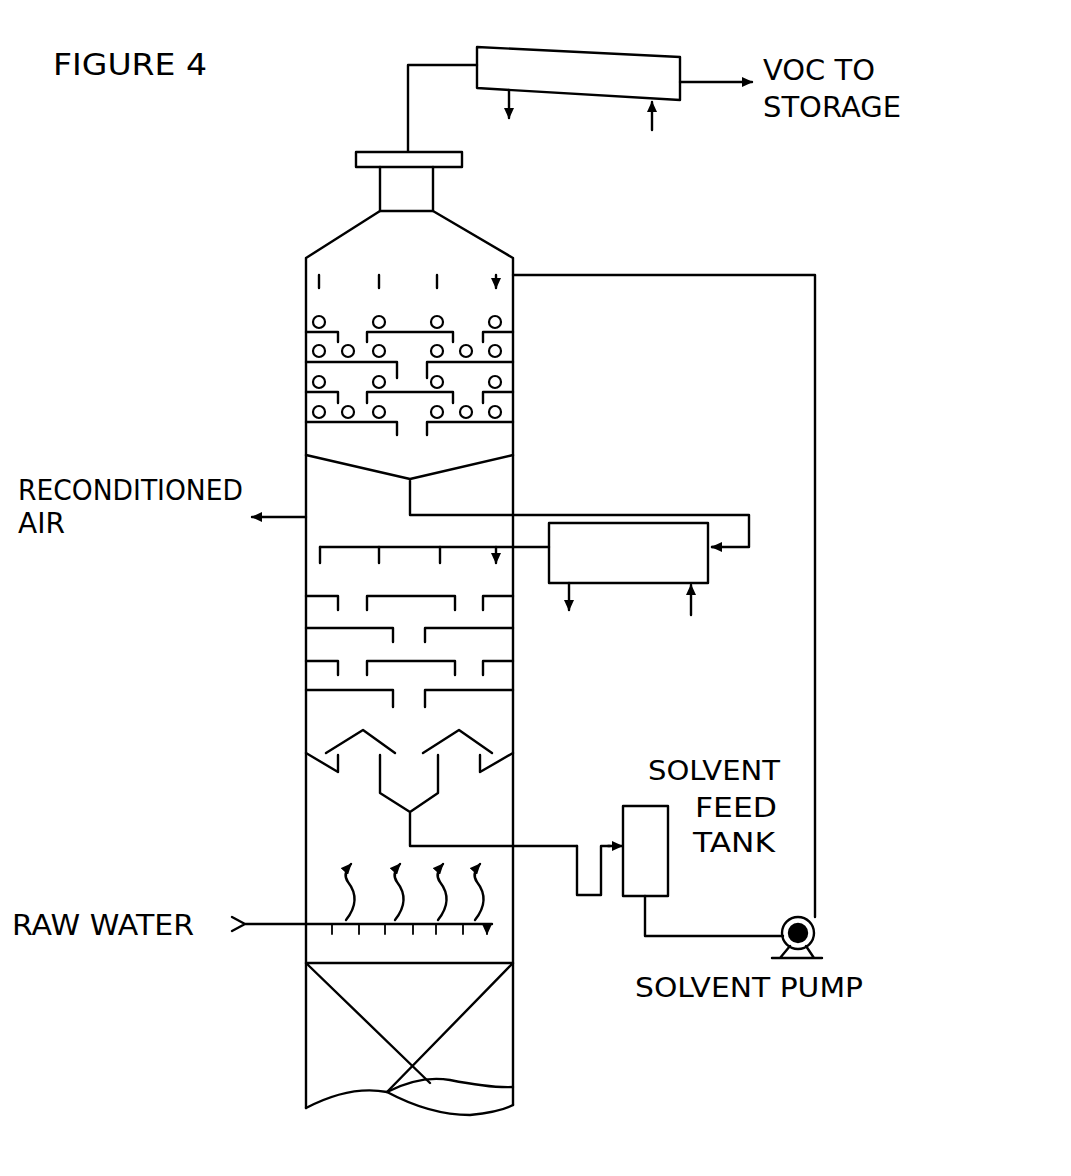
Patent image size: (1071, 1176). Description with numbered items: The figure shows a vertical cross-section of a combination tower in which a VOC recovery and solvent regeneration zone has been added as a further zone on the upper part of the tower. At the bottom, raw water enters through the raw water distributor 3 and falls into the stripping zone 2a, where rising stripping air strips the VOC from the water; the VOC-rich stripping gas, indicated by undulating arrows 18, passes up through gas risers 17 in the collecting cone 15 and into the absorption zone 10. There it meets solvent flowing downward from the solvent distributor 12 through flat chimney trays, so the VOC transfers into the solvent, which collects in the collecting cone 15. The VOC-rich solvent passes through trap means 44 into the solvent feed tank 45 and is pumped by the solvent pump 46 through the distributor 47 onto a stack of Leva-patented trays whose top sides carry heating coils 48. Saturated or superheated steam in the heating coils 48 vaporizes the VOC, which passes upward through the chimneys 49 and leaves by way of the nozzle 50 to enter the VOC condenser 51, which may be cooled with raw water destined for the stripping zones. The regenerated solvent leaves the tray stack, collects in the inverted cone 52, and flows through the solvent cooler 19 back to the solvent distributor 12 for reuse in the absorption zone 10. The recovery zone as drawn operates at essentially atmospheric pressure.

The stripping zone 2a is at (477, 1023).
The raw water distributor 3 is at (350, 930).
The absorption zone 10 is at (328, 635).
The solvent distributor 12 is at (342, 543).
The collecting cone 15 is at (387, 807).
The gas risers 17 is at (362, 780).
The undulating arrows 18 is at (345, 890).
The solvent cooler 19 is at (697, 574).
The trap means 44 is at (588, 852).
The solvent feed tank 45 is at (635, 815).
The solvent pump 46 is at (783, 922).
The distributor 47 is at (348, 268).
The heating coils 48 is at (313, 348).
The chimneys 49 is at (470, 390).
The nozzle 50 is at (425, 192).
The VOC condenser 51 is at (647, 52).
The inverted cone 52 is at (483, 458).